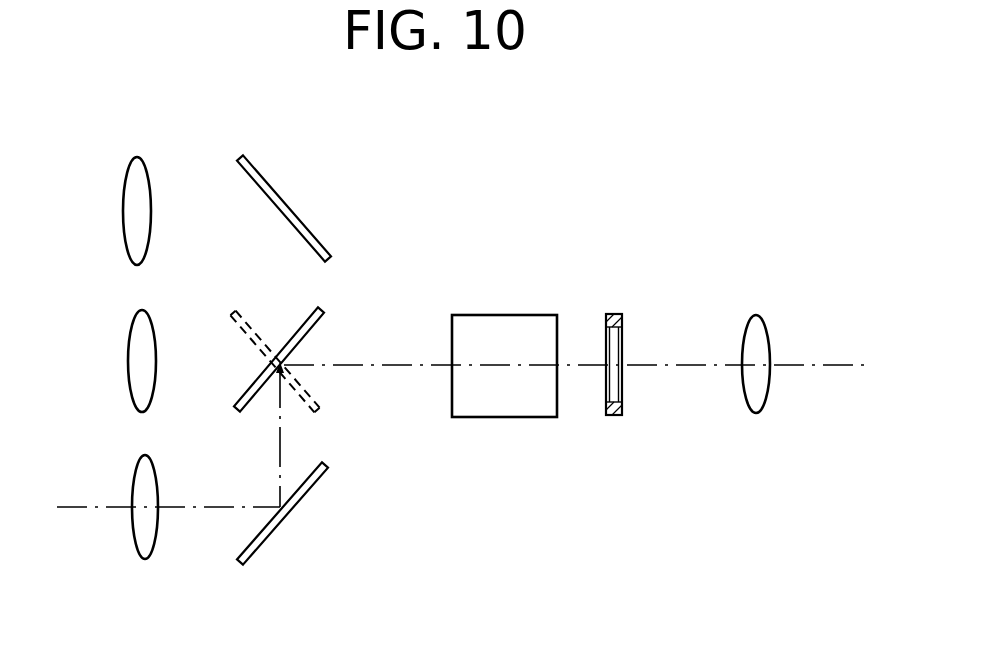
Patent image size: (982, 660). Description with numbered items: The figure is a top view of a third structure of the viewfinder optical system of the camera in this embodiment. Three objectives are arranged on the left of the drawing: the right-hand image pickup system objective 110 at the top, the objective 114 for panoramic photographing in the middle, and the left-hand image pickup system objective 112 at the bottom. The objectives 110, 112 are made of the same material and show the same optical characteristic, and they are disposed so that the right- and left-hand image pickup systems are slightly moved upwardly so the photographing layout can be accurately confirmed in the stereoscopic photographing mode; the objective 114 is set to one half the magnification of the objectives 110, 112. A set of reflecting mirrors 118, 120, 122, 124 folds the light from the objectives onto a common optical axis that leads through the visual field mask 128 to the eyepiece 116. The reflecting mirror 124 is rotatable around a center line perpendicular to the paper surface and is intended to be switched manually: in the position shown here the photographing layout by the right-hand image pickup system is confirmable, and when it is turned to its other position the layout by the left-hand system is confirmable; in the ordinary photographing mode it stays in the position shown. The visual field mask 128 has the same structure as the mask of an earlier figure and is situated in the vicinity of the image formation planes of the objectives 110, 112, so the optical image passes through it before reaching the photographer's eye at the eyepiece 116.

The right-hand image pickup system objective 110 is at (134, 166).
The left-hand image pickup system objective 112 is at (145, 554).
The objective for panoramic photographing 114 is at (138, 313).
The eyepiece 116 is at (748, 318).
The reflecting mirror 118 is at (274, 190).
The reflecting mirror 120 is at (297, 504).
The reflecting mirror 122 is at (495, 318).
The reflecting mirror 124 is at (321, 319).
The visual field mask 128 is at (612, 418).